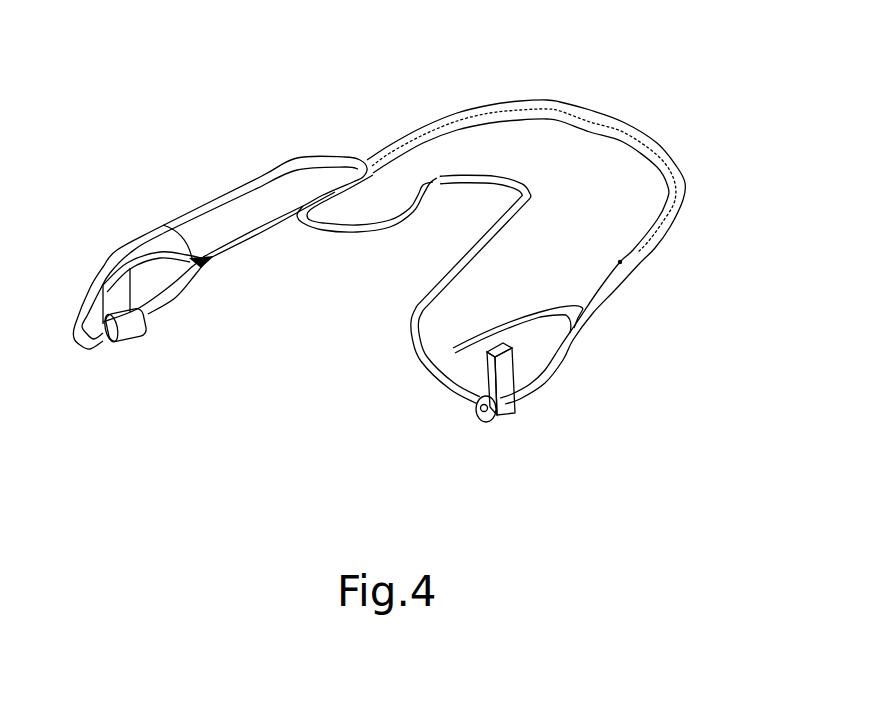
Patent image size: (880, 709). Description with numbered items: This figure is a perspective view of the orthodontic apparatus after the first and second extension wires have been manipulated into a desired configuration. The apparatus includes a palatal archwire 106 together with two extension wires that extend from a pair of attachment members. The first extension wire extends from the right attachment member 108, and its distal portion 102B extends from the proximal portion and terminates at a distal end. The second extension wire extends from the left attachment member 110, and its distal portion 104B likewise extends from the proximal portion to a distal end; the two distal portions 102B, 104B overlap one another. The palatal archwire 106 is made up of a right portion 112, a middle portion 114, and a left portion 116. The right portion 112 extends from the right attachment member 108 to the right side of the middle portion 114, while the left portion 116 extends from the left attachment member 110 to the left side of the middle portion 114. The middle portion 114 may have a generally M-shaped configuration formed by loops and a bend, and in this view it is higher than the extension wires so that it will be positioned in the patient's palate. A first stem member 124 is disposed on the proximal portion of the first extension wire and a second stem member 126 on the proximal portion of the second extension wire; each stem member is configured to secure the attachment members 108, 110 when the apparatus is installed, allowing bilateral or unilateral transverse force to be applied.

The distal portion 102B is at (628, 150).
The distal portion 104B is at (727, 148).
The palatal archwire 106 is at (473, 447).
The right attachment member 108 is at (138, 342).
The left attachment member 110 is at (502, 420).
The right portion 112 is at (209, 192).
The middle portion 114 is at (323, 241).
The left portion 116 is at (468, 240).
The first stem member 124 is at (165, 212).
The second stem member 126 is at (537, 309).